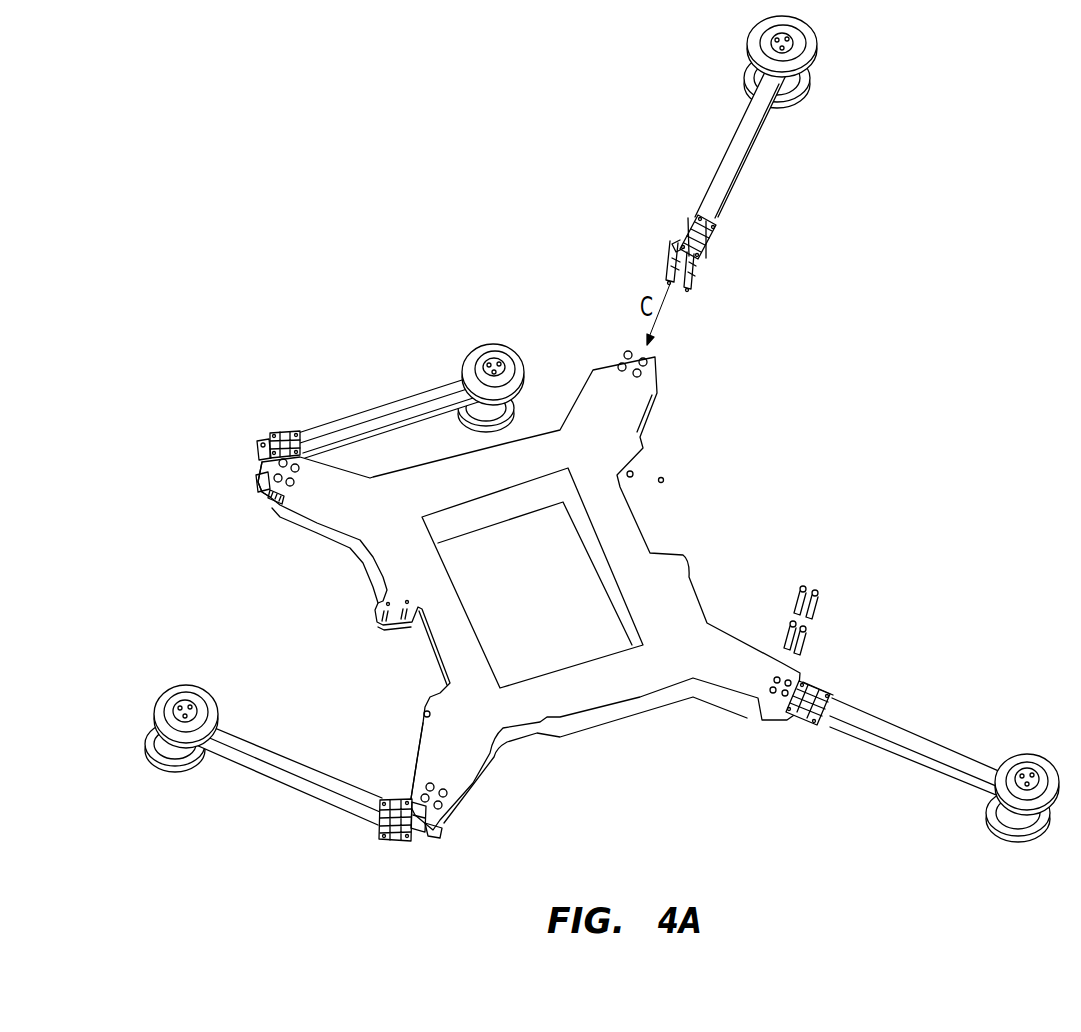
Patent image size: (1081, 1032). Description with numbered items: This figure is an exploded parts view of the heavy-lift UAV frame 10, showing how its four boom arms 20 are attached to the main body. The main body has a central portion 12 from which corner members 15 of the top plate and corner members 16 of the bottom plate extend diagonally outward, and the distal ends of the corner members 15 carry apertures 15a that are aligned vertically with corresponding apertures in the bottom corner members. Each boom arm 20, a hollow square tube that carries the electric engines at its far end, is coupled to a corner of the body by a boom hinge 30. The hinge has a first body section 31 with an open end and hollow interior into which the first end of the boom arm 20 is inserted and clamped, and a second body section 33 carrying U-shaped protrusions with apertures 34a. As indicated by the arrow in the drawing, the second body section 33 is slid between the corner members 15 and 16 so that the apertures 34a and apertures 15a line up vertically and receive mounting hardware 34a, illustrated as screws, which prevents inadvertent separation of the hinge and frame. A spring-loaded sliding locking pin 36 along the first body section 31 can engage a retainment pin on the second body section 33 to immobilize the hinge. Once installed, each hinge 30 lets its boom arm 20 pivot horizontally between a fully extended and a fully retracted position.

The heavy lift UAV frame 10 is at (316, 249).
The central portion 12 is at (537, 587).
The corner member 15 is at (622, 428).
The apertures 15a is at (626, 355).
The corner member 16 is at (280, 517).
The boom arm 20 is at (703, 151).
The boom hinge 30 is at (670, 212).
The first body section 31 is at (714, 241).
The second body section 33 is at (712, 280).
The apertures 34a is at (682, 244).
The spring loaded sliding locking pin 36 is at (430, 838).